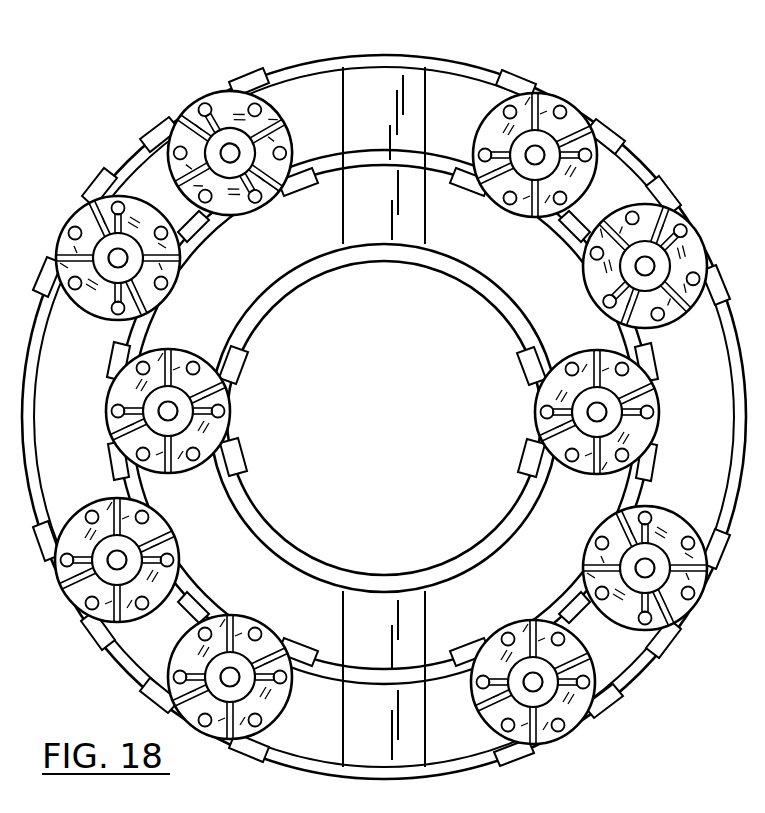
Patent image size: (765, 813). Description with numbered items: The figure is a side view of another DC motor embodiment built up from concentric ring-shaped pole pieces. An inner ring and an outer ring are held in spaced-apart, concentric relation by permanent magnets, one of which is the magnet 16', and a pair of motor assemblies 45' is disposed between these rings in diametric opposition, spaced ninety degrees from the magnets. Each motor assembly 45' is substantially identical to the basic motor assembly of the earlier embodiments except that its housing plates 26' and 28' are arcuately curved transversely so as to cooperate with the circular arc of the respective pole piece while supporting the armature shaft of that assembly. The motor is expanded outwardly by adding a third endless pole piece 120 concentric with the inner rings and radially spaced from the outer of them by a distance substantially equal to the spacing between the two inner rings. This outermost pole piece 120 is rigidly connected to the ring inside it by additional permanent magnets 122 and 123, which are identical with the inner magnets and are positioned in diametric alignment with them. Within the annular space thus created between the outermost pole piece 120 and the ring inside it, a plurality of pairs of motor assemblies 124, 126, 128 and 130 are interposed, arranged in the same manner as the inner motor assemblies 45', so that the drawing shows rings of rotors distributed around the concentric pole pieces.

The third endless pole piece 120 is at (456, 60).
The permanent magnet 122 is at (424, 742).
The permanent magnet 123 is at (450, 110).
The motor assembly 124 is at (668, 195).
The motor assembly 126 is at (658, 668).
The motor assembly 128 is at (109, 662).
The motor assembly 130 is at (140, 130).
The magnet 16' is at (416, 203).
The housing plate 26' is at (385, 411).
The housing plate 28' is at (382, 411).
The motor assembly 45' is at (382, 435).